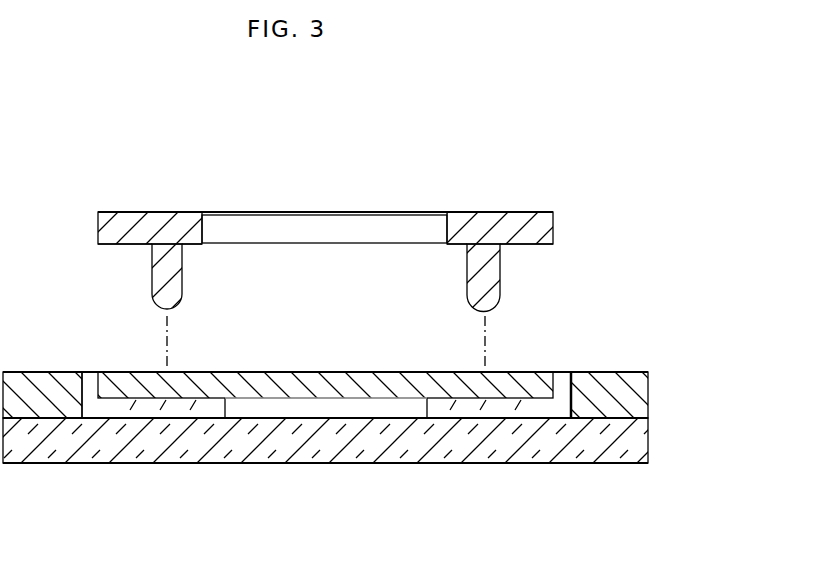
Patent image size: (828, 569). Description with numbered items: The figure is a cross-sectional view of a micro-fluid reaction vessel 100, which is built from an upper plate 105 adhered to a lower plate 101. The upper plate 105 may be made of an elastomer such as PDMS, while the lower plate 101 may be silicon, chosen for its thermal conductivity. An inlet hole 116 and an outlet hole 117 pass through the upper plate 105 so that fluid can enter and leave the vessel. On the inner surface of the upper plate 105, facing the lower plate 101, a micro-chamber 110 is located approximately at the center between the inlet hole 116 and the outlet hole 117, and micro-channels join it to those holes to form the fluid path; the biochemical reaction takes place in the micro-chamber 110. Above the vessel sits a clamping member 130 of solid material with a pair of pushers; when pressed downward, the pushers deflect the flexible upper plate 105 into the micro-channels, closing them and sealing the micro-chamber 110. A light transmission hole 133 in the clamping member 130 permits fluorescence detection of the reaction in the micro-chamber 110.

The micro-fluid reaction vessel 100 is at (367, 395).
The lower plate 101 is at (647, 444).
The upper plate 105 is at (647, 397).
The micro-chamber 110 is at (330, 406).
The inlet hole 116 is at (91, 382).
The outlet hole 117 is at (563, 376).
The clamping member 130 is at (534, 228).
The light transmission hole 133 is at (336, 226).